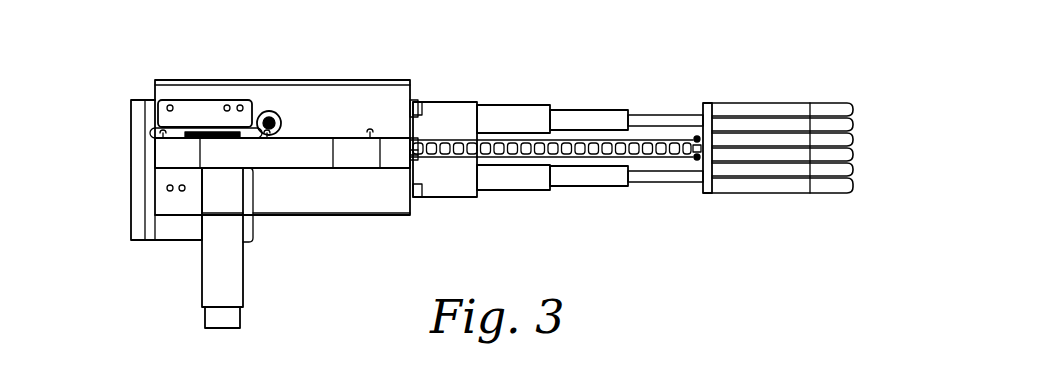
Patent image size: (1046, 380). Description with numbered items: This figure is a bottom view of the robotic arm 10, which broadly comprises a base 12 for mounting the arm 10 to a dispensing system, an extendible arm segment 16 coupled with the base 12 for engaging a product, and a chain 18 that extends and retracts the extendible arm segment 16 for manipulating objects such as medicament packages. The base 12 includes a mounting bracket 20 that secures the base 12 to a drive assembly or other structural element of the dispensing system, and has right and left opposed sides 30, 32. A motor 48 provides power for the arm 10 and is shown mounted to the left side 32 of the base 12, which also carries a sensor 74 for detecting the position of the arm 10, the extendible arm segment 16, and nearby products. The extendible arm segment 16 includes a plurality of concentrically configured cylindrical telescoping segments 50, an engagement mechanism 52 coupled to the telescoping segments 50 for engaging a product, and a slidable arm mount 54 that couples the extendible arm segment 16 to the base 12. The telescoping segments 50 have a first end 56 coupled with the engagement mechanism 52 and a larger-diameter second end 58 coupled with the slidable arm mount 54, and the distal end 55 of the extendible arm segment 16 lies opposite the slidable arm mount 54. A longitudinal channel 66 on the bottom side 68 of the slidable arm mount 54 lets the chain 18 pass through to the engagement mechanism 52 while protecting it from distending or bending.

The arm 10 is at (59, 62).
The base 12 is at (325, 205).
The extendible arm segment 16 is at (522, 82).
The chain 18 is at (662, 150).
The mounting bracket 20 is at (130, 235).
The right side 30 is at (290, 80).
The left side 32 is at (281, 218).
The motor 48 is at (235, 290).
The telescoping segments 50 is at (580, 117).
The engagement mechanism 52 is at (782, 108).
The slidable arm mount 54 is at (438, 105).
The distal end 55 is at (653, 87).
The first end 56 is at (682, 93).
The second end 58 is at (505, 222).
The longitudinal channel 66 is at (445, 158).
The bottom side 68 is at (458, 112).
The sensor 74 is at (208, 328).